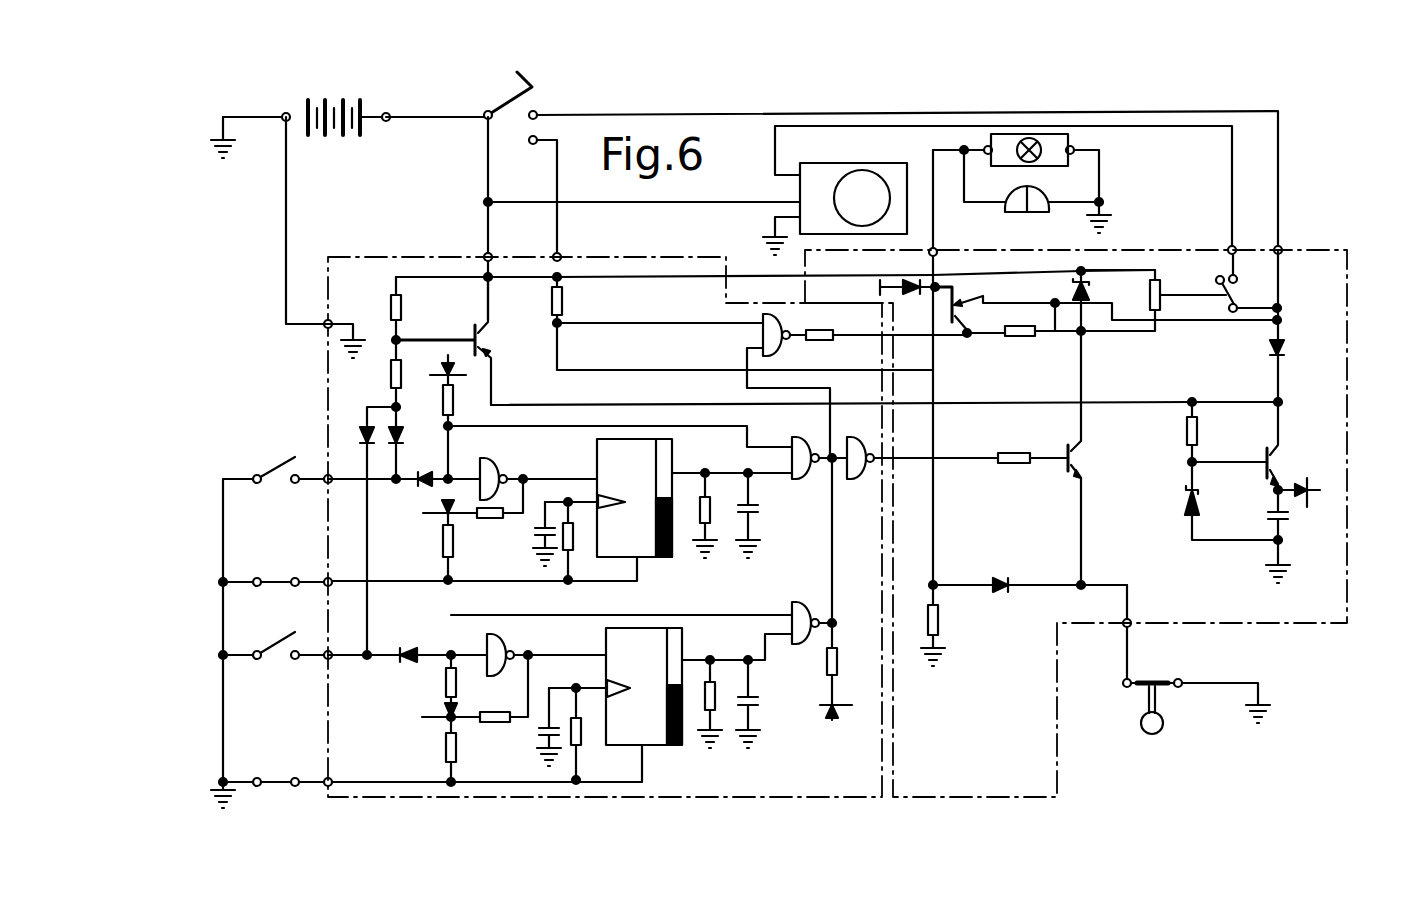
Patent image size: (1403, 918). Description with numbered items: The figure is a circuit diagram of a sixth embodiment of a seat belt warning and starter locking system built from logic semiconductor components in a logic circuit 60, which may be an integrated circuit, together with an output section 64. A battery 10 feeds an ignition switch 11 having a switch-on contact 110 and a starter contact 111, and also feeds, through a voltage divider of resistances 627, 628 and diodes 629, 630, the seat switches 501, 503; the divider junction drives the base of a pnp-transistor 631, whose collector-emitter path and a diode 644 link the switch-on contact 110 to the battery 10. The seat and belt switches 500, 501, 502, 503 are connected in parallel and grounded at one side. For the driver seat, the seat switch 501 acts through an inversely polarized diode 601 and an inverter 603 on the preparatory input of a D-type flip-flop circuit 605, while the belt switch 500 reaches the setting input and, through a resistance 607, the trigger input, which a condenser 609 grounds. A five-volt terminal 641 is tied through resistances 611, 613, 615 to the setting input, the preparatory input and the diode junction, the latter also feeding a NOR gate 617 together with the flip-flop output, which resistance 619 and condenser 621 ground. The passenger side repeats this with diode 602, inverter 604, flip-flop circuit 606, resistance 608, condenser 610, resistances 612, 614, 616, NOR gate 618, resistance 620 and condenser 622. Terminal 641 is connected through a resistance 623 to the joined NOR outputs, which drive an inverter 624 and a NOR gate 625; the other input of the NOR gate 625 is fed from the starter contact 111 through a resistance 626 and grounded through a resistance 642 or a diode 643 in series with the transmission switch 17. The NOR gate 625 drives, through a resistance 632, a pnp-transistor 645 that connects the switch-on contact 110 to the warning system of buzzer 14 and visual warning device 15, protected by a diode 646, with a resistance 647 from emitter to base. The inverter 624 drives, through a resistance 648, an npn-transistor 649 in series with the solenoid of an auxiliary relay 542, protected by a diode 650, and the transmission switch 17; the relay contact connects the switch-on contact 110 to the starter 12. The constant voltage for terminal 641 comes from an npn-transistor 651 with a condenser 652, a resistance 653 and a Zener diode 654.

The battery 10 is at (332, 104).
The ignition switch 11 is at (508, 100).
The switch-on contact 110 is at (538, 112).
The starter contact 111 is at (534, 144).
The engine starter motor 12 is at (831, 174).
The buzzer 14 is at (1039, 198).
The visual warning device 15 is at (1068, 134).
The transmission switch 17 is at (1155, 682).
The logic circuit 60 is at (328, 708).
The output circuit 64 is at (1250, 624).
The driver belt switch 500 is at (270, 579).
The driver seat switch 501 is at (270, 472).
The passenger belt switch 502 is at (268, 780).
The passenger seat switch 503 is at (270, 645).
The auxiliary relay 542 is at (1150, 290).
The diode 601 is at (420, 472).
The diode 602 is at (404, 648).
The inverter 603 is at (488, 460).
The inverter 604 is at (508, 642).
The D-type flip-flop circuit 605 is at (669, 450).
The flip-flop circuit 606 is at (684, 638).
The resistance 607 is at (572, 548).
The resistance 608 is at (582, 746).
The condenser 609 is at (542, 536).
The condenser 610 is at (542, 734).
The resistance 611 is at (442, 541).
The resistance 612 is at (445, 747).
The resistance 613 is at (488, 520).
The resistance 614 is at (494, 704).
The resistance 615 is at (448, 402).
The resistance 616 is at (445, 688).
The NOR gate 617 is at (799, 436).
The NOR gate 618 is at (806, 600).
The resistance 619 is at (700, 528).
The resistance 620 is at (706, 716).
The condenser 621 is at (754, 507).
The condenser 622 is at (762, 701).
The resistance 623 is at (828, 670).
The inverter 624 is at (866, 436).
The NOR gate 625 is at (785, 344).
The resistance 626 is at (564, 295).
The resistance 627 is at (392, 304).
The resistance 628 is at (392, 382).
The diode 629 is at (412, 420).
The diode 630 is at (357, 430).
The pnp-transistor 631 is at (484, 326).
The resistance 632 is at (820, 331).
The voltage terminal 641 is at (448, 364).
The resistance 642 is at (938, 620).
The diode 643 is at (996, 574).
The diode 644 is at (1267, 352).
The pnp-transistor 645 is at (957, 308).
The protecting diode 646 is at (909, 296).
The resistance 647 is at (1018, 335).
The resistance 648 is at (1016, 452).
The npn-transistor 649 is at (1083, 470).
The protecting diode 650 is at (1069, 288).
The npn-transistor 651 is at (1274, 446).
The condenser 652 is at (1288, 522).
The resistance 653 is at (1186, 436).
The Zener diode 654 is at (1184, 501).